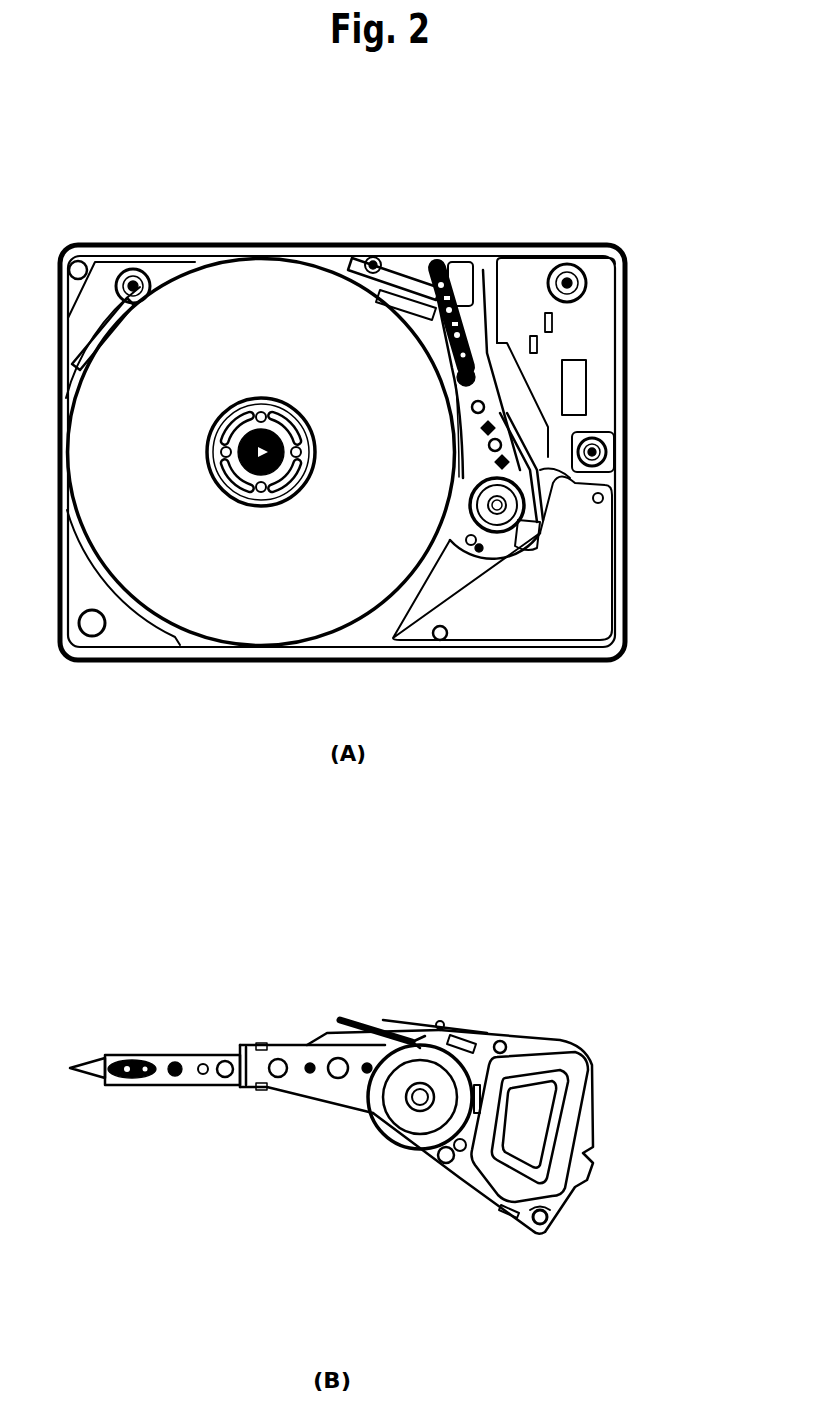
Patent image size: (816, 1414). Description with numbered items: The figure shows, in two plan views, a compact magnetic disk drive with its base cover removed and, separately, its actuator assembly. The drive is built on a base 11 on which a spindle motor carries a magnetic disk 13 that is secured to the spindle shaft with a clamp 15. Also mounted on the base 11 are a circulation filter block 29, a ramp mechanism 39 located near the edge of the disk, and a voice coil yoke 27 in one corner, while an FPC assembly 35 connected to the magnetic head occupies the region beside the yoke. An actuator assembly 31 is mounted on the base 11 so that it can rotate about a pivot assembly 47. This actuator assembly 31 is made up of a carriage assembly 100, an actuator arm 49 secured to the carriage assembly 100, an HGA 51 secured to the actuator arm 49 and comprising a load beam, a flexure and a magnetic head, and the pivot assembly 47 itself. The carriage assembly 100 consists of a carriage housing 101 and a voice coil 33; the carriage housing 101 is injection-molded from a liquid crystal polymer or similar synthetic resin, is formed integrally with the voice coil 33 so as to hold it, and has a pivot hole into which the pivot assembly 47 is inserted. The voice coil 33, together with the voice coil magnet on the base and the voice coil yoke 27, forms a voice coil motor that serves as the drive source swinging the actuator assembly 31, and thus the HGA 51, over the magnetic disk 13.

The base 11 is at (388, 248).
The magnetic disk 13 is at (265, 632).
The clamp 15 is at (242, 408).
The voice coil yoke 27 is at (517, 627).
The circulation filter block 29 is at (137, 266).
The actuator assembly 31 is at (425, 386).
The voice coil 33 is at (528, 540).
The FPC assembly 35 is at (603, 313).
The ramp mechanism 39 is at (370, 272).
The pivot assembly 47 is at (468, 500).
The actuator arm 49 is at (463, 462).
The HGA 51 is at (440, 312).
The carriage assembly 100 is at (503, 1033).
The carriage housing 101 is at (522, 552).